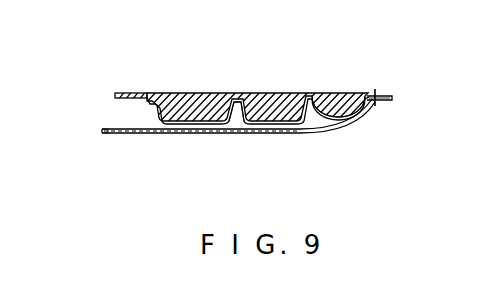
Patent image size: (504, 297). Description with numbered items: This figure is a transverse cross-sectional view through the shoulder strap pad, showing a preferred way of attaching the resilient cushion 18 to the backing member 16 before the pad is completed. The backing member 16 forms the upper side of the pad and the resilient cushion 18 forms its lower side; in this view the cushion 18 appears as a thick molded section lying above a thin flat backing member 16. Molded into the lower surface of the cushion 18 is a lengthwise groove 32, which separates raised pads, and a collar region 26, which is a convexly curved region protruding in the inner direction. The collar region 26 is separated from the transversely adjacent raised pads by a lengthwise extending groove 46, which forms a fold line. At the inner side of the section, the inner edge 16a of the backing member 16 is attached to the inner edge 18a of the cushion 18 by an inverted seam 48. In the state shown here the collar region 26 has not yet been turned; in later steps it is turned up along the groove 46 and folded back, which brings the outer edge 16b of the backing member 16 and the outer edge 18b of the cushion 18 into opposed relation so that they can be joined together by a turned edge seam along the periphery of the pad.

The backing member 16 is at (194, 150).
The inner edge of the backing member 16a is at (392, 101).
The outer edge of the backing member 16b is at (103, 132).
The resilient cushion 18 is at (200, 93).
The inner edge of the cushion 18a is at (380, 98).
The outer edge of the cushion 18b is at (115, 96).
The collar region 26 is at (333, 93).
The lengthwise groove 32 is at (242, 125).
The lengthwise extending groove 46 is at (318, 125).
The inverted seam 48 is at (375, 92).